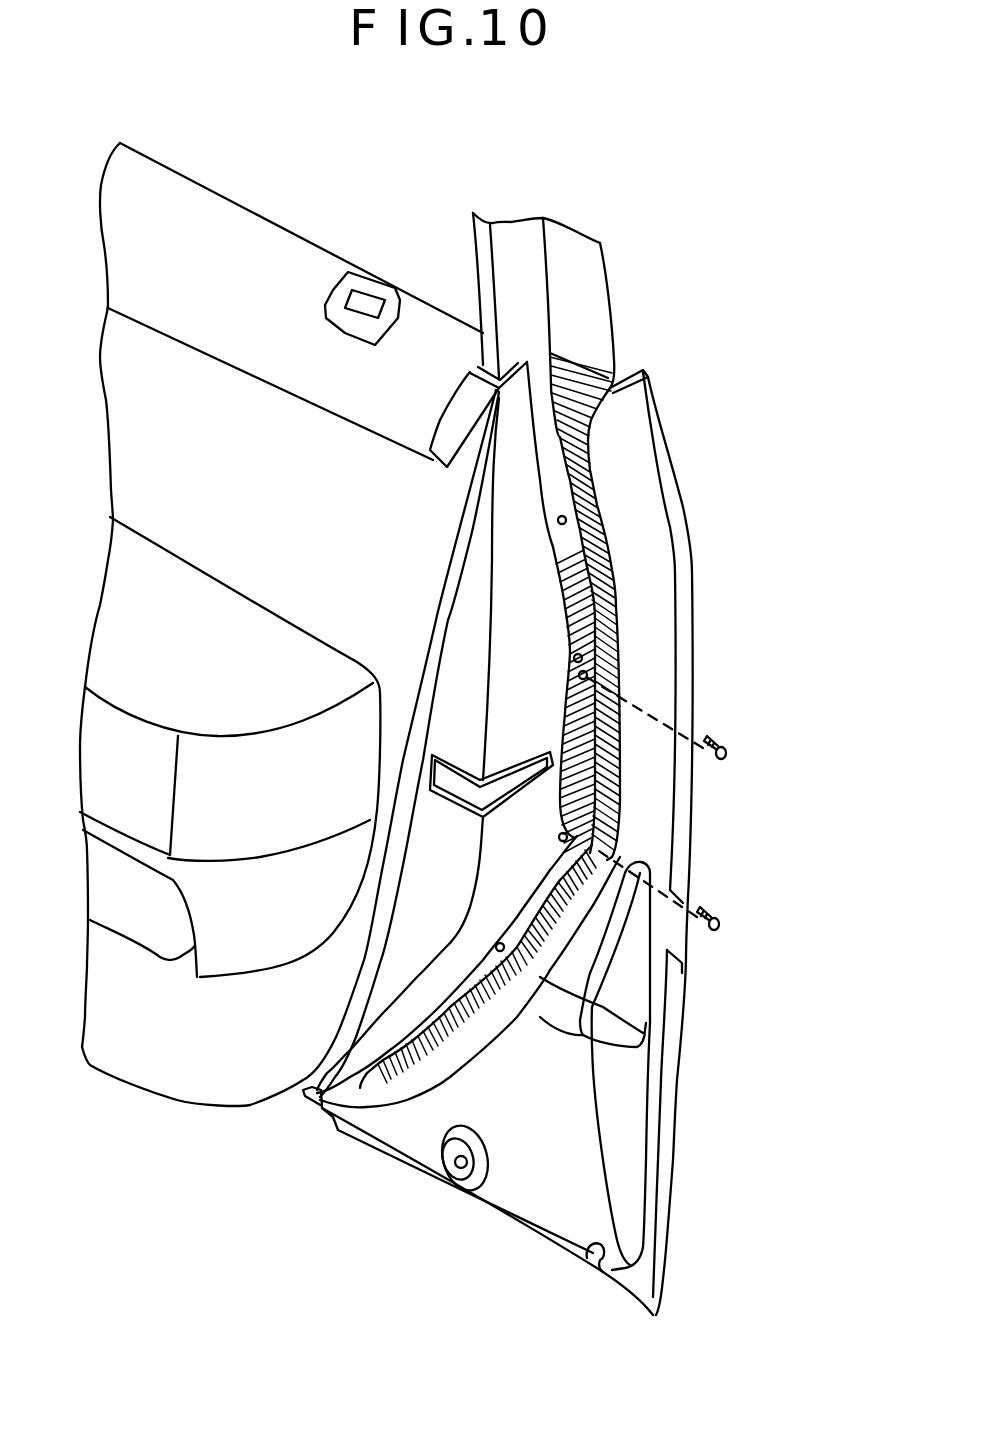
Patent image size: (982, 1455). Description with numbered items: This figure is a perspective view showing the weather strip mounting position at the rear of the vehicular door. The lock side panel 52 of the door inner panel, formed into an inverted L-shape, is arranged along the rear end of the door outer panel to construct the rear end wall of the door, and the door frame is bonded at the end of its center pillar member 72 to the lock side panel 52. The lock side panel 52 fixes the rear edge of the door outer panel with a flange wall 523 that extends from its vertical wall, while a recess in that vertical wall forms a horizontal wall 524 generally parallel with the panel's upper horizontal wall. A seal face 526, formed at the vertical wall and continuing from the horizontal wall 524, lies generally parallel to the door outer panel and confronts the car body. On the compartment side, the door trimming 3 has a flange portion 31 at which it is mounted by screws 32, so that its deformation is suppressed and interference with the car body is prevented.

The door trimming 3 is at (263, 257).
The center pillar member 72 is at (517, 250).
The lock side panel 52 is at (683, 495).
The seal face 526 is at (577, 435).
The flange portion 31 is at (577, 603).
The screws 32 is at (730, 750).
The horizontal wall 524 is at (613, 842).
The flange wall 523 is at (673, 1092).